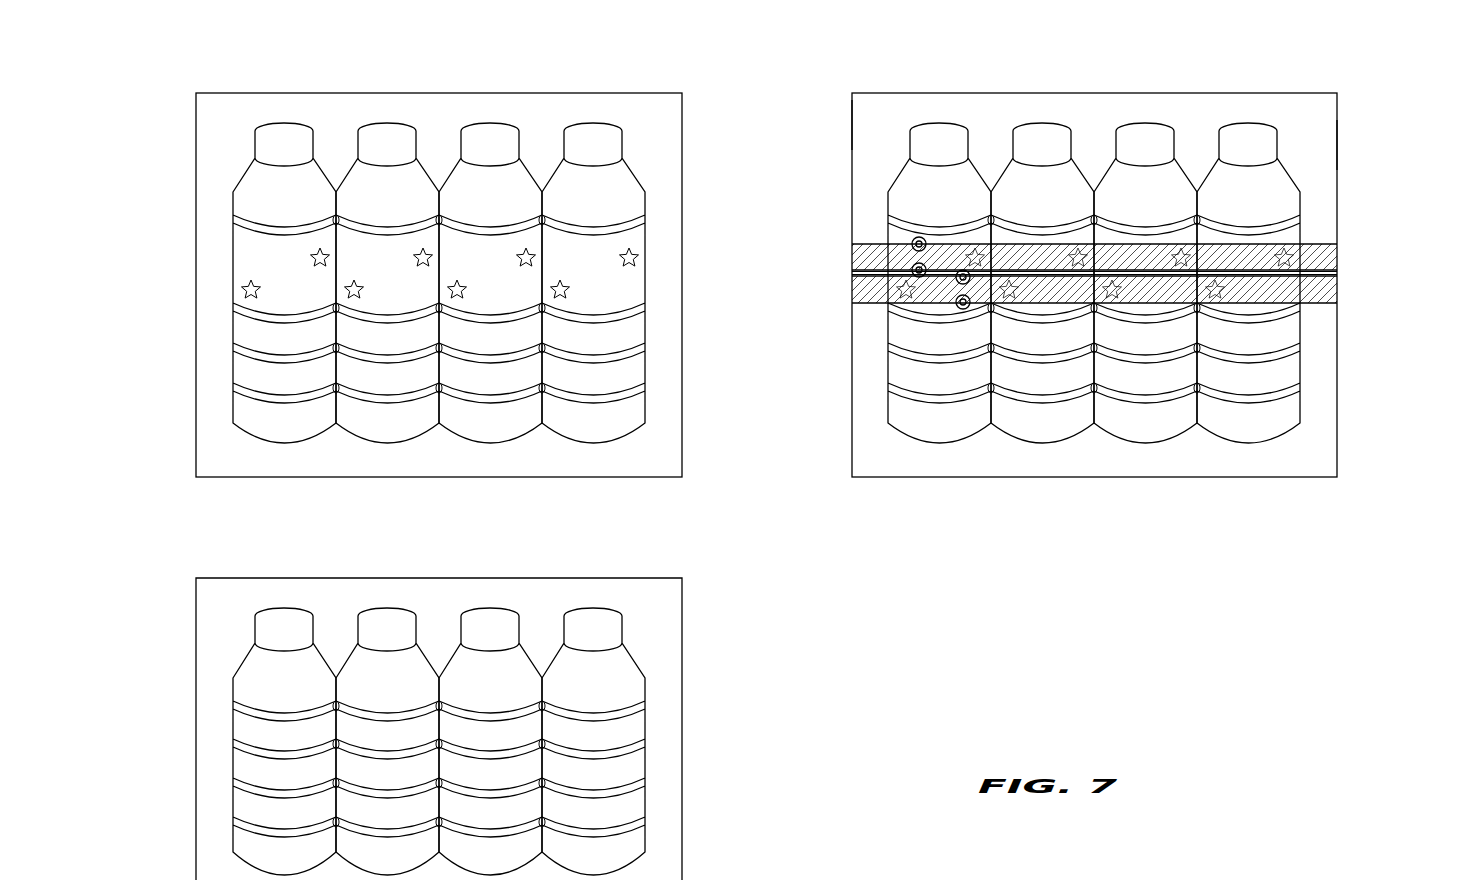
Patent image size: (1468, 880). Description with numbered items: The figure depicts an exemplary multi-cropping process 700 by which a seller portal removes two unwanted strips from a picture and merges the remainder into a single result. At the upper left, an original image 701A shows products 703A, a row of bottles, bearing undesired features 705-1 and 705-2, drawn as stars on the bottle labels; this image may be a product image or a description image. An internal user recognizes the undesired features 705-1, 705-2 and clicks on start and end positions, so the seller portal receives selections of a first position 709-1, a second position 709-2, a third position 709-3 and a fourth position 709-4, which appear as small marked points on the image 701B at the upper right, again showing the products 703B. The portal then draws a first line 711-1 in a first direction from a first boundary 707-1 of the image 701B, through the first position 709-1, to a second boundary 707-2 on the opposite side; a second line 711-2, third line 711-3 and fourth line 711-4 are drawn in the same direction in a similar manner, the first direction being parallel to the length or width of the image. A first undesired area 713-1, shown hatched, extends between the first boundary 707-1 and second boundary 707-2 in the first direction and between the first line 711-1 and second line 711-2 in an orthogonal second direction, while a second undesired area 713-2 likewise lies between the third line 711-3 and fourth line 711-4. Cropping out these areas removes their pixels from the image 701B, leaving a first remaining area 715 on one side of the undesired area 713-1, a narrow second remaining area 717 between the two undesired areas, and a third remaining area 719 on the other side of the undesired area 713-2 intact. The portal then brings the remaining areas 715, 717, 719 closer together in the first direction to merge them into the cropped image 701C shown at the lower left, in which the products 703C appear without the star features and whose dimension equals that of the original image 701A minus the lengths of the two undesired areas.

The multi-cropping process 700 is at (155, 13).
The image 701A is at (605, 93).
The image 701B is at (1262, 93).
The cropped image 701C is at (594, 578).
The products 703A is at (287, 122).
The products 703B is at (938, 122).
The products 703C is at (290, 607).
The undesired feature 705-1 is at (311, 257).
The undesired feature 705-2 is at (242, 290).
The first boundary 707-1 is at (852, 125).
The second boundary 707-2 is at (1337, 148).
The first position 709-1 is at (912, 241).
The second position 709-2 is at (912, 269).
The third position 709-3 is at (956, 278).
The fourth position 709-4 is at (957, 305).
The first line 711-1 is at (1318, 250).
The second line 711-2 is at (1325, 258).
The third line 711-3 is at (1325, 284).
The fourth line 711-4 is at (1310, 300).
The undesired area 713-1 is at (1308, 262).
The undesired area 713-2 is at (1308, 285).
The first remaining area 715 is at (843, 93).
The second remaining area 717 is at (1337, 274).
The third remaining area 719 is at (843, 302).